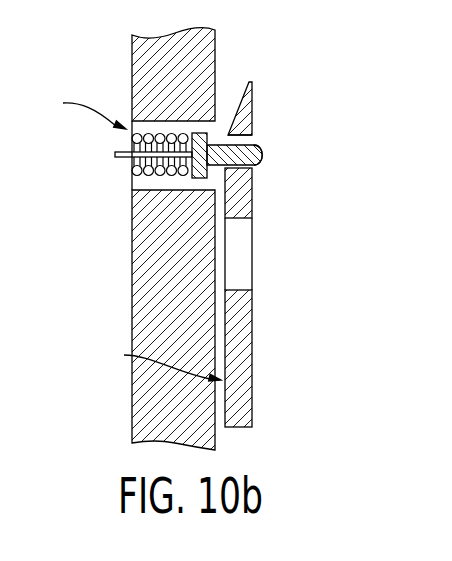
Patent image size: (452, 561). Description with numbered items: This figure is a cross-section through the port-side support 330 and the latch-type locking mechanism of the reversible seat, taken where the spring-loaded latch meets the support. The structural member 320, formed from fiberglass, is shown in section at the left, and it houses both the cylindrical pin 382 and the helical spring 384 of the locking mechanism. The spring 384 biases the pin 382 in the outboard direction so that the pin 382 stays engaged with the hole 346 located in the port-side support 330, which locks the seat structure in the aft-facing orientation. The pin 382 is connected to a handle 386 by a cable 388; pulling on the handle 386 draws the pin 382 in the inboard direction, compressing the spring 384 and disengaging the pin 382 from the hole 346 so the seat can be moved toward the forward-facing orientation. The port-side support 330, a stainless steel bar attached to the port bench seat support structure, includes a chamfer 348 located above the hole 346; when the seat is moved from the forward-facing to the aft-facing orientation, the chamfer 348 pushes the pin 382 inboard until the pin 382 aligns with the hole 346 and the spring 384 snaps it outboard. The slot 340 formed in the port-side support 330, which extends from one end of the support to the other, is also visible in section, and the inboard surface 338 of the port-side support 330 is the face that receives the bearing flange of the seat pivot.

The structural member 320 is at (132, 71).
The port-side support 330 is at (240, 197).
The slot 340 is at (240, 253).
The hole 346 is at (248, 137).
The chamfer 348 is at (238, 103).
The pin 382 is at (257, 157).
The helical spring 384 is at (138, 170).
The handle 386 is at (79, 107).
The cable 388 is at (115, 153).
The inboard surface 338 is at (157, 358).